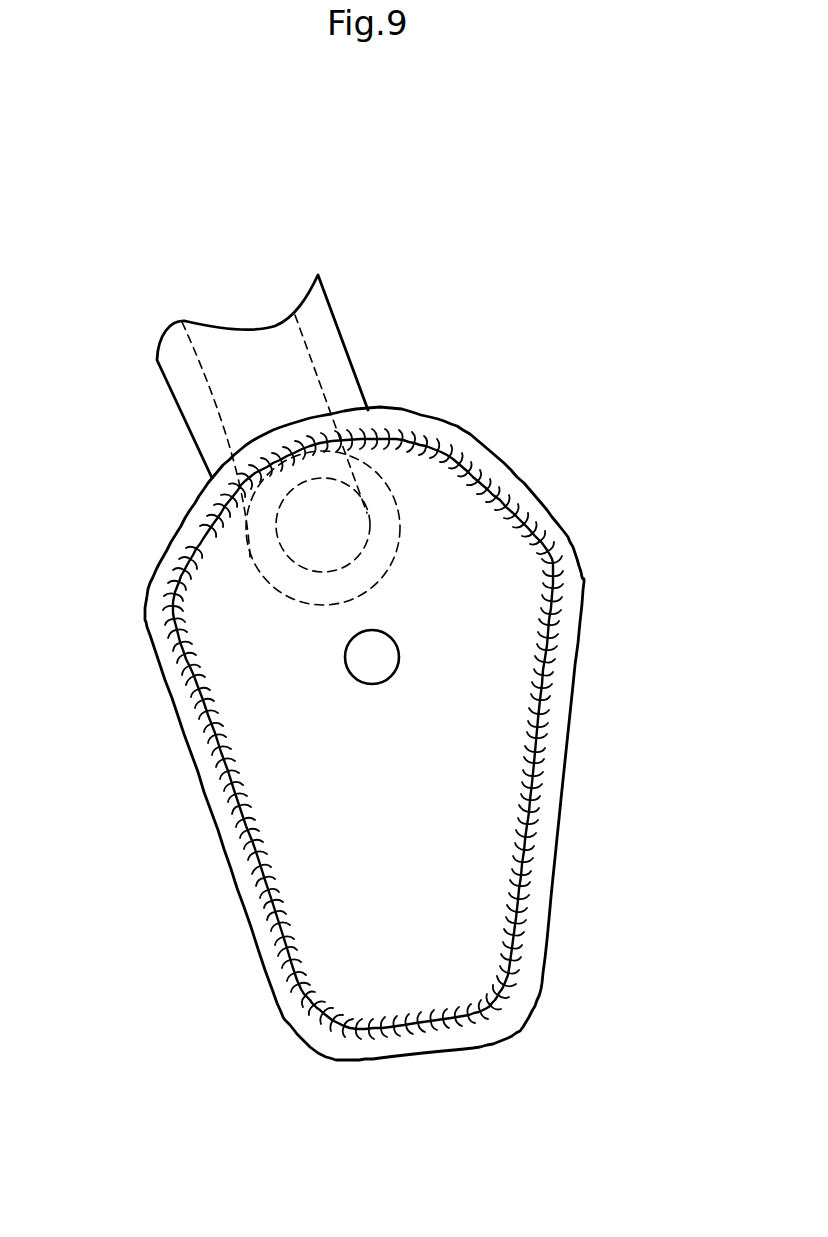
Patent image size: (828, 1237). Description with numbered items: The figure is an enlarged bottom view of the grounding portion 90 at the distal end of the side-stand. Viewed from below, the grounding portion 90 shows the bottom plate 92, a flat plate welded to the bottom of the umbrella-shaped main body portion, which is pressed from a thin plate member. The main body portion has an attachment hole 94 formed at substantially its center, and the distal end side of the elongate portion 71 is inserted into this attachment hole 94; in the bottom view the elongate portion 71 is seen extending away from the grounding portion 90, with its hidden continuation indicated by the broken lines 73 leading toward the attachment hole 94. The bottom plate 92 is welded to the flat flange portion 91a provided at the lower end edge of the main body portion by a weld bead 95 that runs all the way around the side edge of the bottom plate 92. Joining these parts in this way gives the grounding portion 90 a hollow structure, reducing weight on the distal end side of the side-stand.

The elongate portion 71 is at (350, 347).
The strap hidden portion 73 is at (226, 422).
The grounding portion 90 is at (580, 563).
The flange portion 91a is at (478, 467).
The bottom plate 92 is at (503, 543).
The attachment hole 94 is at (398, 528).
The weld bead 95 is at (543, 730).